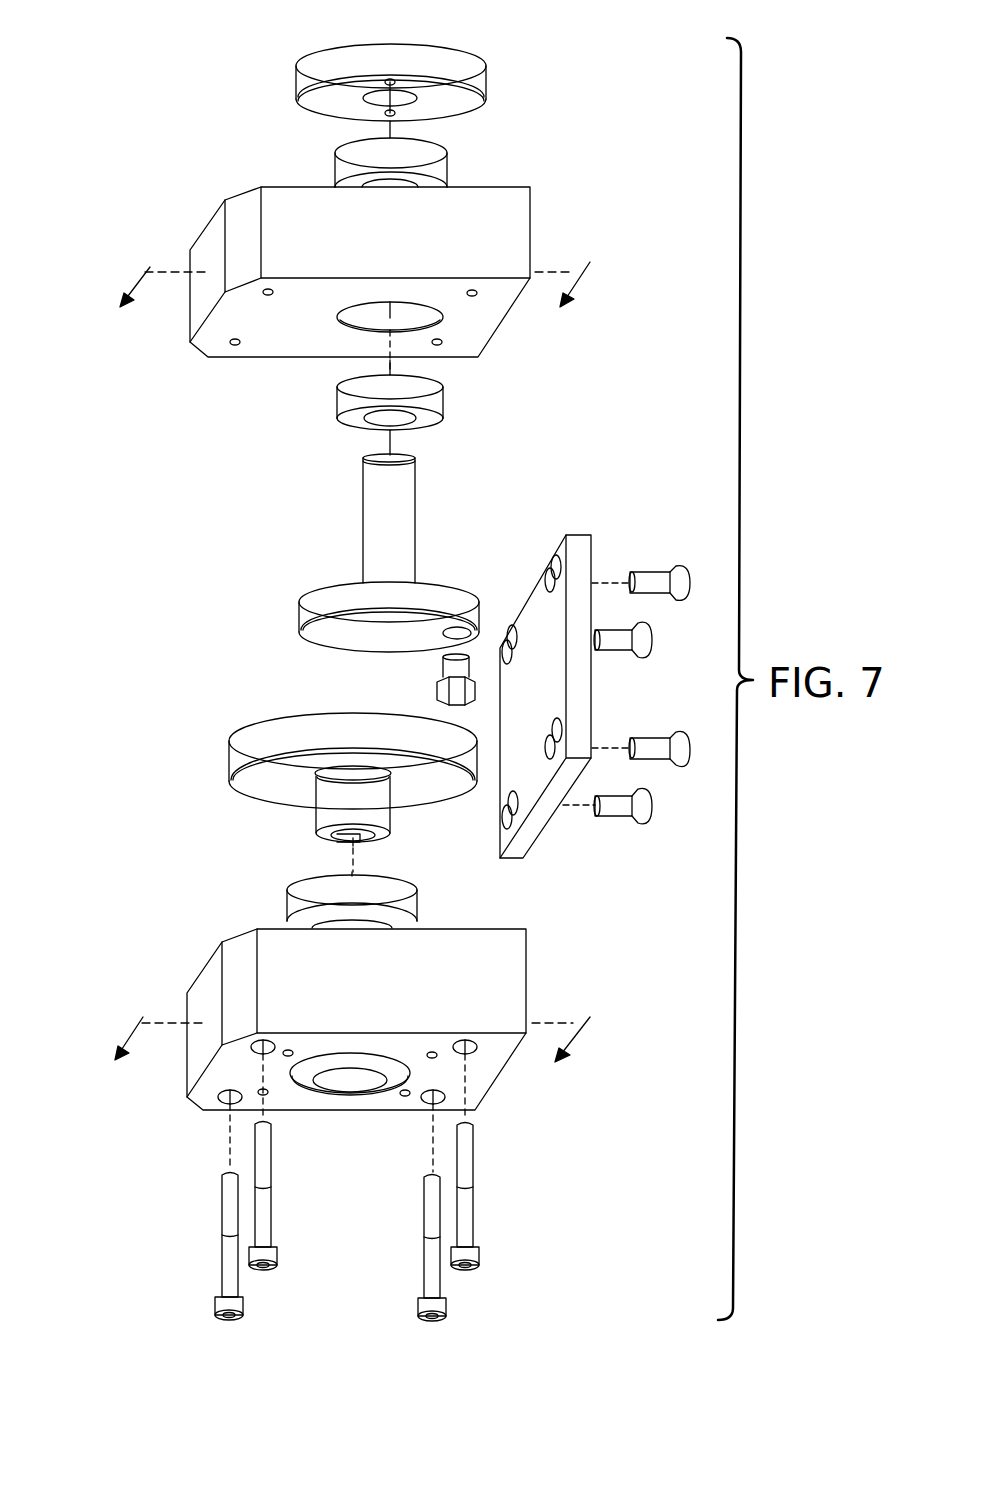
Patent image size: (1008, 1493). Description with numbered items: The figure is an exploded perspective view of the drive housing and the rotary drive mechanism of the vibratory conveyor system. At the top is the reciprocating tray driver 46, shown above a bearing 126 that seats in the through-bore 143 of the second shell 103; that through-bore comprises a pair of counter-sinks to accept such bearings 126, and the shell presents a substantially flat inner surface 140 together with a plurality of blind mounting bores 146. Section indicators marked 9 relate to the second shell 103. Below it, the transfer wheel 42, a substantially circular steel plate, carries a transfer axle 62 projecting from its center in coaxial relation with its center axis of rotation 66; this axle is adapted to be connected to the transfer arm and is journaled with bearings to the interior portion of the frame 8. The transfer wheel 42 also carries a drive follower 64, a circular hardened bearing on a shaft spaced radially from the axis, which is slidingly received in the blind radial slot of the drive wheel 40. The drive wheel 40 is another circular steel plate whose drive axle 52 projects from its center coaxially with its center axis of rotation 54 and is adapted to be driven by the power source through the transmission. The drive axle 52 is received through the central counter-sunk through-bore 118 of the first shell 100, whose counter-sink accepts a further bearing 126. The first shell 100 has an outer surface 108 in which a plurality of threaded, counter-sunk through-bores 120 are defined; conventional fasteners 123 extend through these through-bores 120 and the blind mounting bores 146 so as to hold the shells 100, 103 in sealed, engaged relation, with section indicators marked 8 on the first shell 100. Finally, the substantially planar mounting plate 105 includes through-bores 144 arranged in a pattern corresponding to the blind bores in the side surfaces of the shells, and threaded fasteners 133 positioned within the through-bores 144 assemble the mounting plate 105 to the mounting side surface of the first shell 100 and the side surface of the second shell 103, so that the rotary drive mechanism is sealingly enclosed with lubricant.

The reciprocating tray driver 46 is at (492, 53).
The bearing 126 is at (430, 148).
The second shell 103 is at (535, 221).
The section line 9- 9 is at (359, 271).
The inner surface 140 is at (306, 331).
The through-bore 143 is at (437, 316).
The blind mounting bores 146 is at (235, 346).
The center axis of rotation 66 is at (390, 448).
The transfer axle 62 is at (378, 512).
The transfer wheel 42 is at (294, 594).
The drive follower 64 is at (428, 681).
The drive wheel 40 is at (232, 722).
The drive axle 52 is at (362, 840).
The center axis of rotation 54 is at (343, 850).
The through-bores 144 is at (504, 643).
The threaded fasteners 133 is at (675, 567).
The mounting plate 105 is at (575, 682).
The first shell 100 is at (530, 946).
The frame 8 is at (354, 1024).
The outer surface 108 is at (456, 1083).
The counter-sunk through-bore 118 is at (348, 1088).
The counter-sunk through-bores 120 is at (477, 1053).
The fasteners 123 is at (467, 1153).